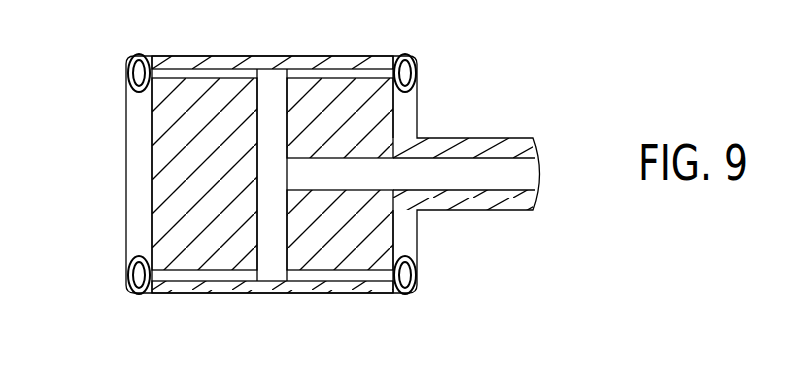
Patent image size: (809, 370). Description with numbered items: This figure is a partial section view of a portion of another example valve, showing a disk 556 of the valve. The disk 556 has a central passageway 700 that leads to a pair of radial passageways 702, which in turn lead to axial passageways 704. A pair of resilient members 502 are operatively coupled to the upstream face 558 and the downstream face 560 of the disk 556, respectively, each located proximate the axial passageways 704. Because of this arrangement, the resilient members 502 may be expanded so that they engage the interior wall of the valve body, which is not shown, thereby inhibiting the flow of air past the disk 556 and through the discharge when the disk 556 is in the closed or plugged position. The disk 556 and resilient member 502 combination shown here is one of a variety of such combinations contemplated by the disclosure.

The disk 556 is at (180, 47).
The resilient member 502 is at (126, 170).
The axial passageway 704 is at (307, 68).
The upstream face 558 is at (152, 205).
The downstream face 560 is at (395, 246).
The radial passageway 702 is at (272, 128).
The central passageway 700 is at (362, 184).